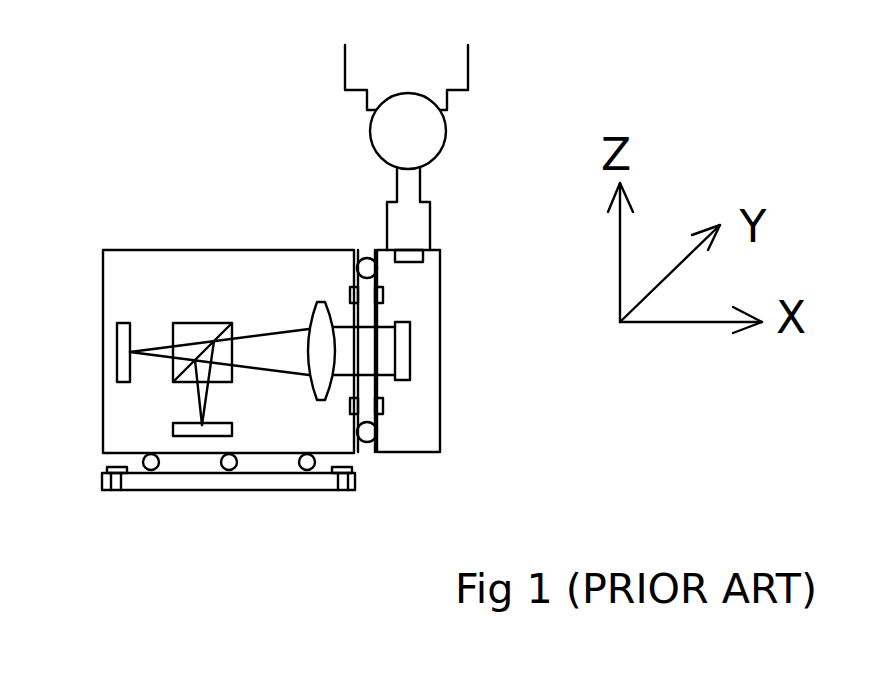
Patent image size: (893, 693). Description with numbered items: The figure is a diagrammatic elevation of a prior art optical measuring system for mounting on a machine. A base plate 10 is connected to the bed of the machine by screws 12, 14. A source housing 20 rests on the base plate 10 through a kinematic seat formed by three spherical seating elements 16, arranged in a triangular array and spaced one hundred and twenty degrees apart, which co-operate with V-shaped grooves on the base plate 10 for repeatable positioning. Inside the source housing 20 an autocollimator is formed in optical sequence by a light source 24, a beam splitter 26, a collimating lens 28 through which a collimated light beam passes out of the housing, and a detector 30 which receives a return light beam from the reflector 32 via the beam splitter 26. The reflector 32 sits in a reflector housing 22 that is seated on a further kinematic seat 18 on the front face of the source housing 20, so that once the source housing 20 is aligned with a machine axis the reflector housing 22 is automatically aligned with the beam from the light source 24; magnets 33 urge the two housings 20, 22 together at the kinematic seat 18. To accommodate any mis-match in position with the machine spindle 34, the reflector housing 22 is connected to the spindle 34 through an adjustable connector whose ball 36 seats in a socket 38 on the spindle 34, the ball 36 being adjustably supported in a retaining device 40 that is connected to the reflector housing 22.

The base plate 10 is at (168, 485).
The screw 12 is at (113, 490).
The screw 14 is at (343, 490).
The spherical seating elements 16 is at (229, 466).
The kinematic seat 18 is at (367, 441).
The source housing 20 is at (118, 268).
The reflector housing 22 is at (420, 445).
The light source 24 is at (118, 375).
The beam splitter 26 is at (192, 327).
The collimating lens 28 is at (322, 310).
The detector 30 is at (178, 432).
The reflector 32 is at (402, 350).
The magnets 33 is at (380, 398).
The machine spindle 34 is at (353, 62).
The ball 36 is at (435, 135).
The socket 38 is at (425, 90).
The retaining device 40 is at (420, 227).